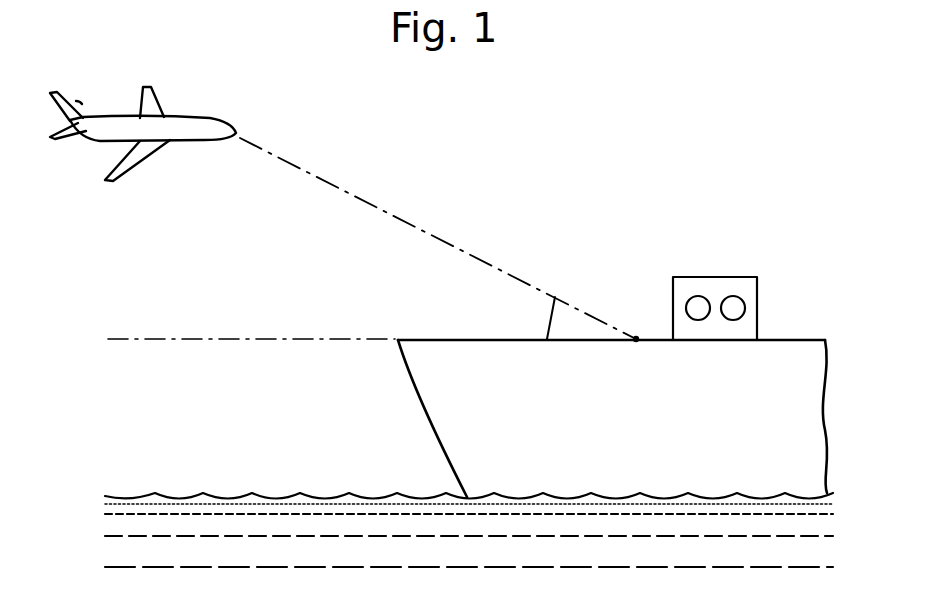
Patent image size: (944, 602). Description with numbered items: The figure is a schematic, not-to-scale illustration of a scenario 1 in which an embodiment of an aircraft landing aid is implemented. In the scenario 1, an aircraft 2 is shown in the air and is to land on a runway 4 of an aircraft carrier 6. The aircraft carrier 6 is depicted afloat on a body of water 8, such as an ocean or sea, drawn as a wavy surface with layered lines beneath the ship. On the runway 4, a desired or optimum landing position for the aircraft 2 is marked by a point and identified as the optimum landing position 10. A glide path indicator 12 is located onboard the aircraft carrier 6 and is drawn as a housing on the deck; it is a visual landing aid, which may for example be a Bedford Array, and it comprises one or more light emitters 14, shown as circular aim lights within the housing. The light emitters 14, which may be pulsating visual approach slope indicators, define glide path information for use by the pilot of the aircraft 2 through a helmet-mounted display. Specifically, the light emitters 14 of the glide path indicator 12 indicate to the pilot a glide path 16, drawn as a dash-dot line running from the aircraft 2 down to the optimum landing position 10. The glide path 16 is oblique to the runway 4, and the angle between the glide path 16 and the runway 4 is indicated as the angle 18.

The scenario 1 is at (625, 138).
The aircraft 2 is at (207, 118).
The runway 4 is at (415, 338).
The aircraft carrier 6 is at (477, 437).
The body of water 8 is at (270, 508).
The optimum landing position 10 is at (636, 336).
The glide path indicator 12 is at (715, 277).
The light emitters 14 is at (733, 320).
The glide path 16 is at (368, 203).
The angle 18 is at (547, 323).